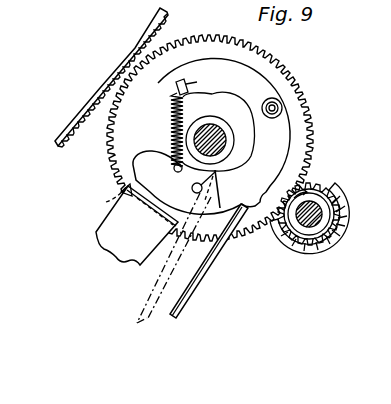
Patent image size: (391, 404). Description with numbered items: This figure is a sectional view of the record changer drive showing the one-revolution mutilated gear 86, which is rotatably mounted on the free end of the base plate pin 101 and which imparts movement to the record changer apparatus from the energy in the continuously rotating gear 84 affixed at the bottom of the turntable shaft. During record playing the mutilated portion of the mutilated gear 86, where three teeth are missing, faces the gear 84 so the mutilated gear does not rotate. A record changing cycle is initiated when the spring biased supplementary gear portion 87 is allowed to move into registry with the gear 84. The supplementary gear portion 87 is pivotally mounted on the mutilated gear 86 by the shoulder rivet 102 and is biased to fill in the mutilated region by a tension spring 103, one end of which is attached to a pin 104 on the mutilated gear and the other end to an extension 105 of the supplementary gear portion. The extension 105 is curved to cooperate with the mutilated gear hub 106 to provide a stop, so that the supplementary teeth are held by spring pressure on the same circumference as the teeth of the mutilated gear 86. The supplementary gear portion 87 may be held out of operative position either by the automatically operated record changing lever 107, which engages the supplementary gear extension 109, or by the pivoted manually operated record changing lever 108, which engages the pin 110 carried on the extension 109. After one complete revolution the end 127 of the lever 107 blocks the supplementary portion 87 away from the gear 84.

The gear 84 is at (335, 208).
The mutilated gear 86 is at (314, 139).
The supplementary gear portion 87 is at (289, 131).
The base plate pin 101 is at (224, 136).
The shoulder rivet 102 is at (281, 107).
The tension spring 103 is at (170, 127).
The pin 104 is at (171, 177).
The extension 105 is at (212, 80).
The mutilated gear hub 106 is at (213, 118).
The automatically operated record changing lever 107 is at (142, 236).
The manually operated record changing lever 108 is at (163, 278).
The supplementary gear extension 109 is at (180, 203).
The pin 110 is at (215, 173).
The end of lever 127 is at (114, 199).